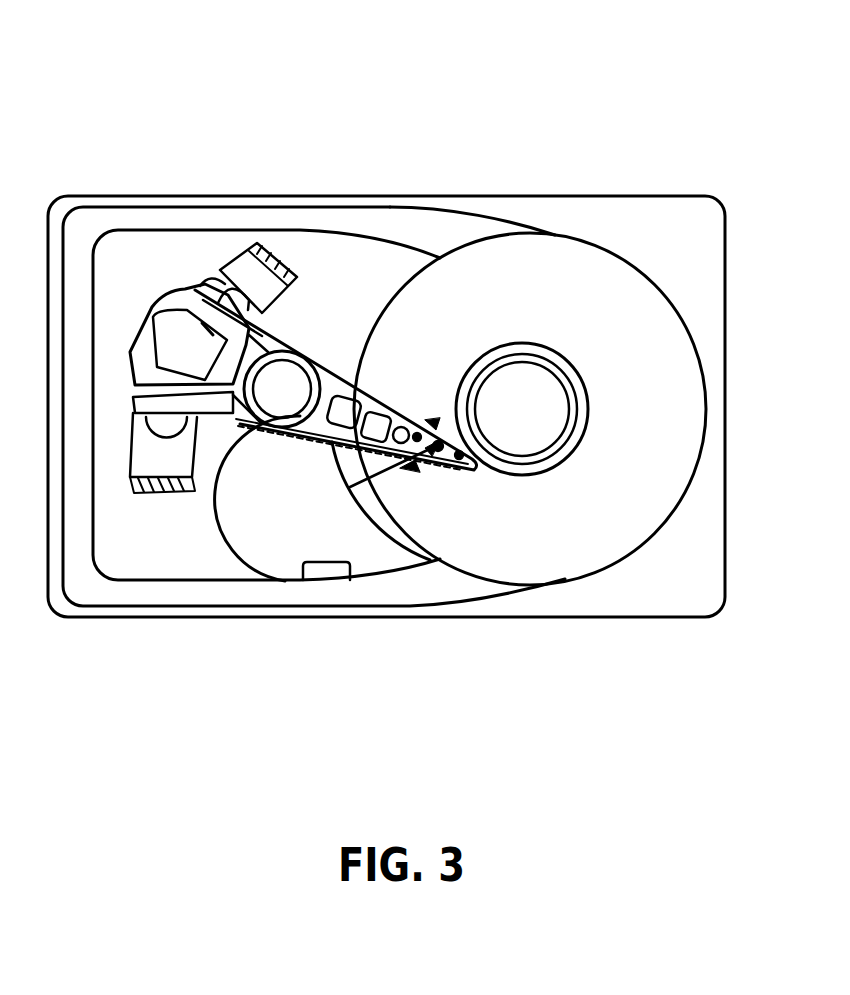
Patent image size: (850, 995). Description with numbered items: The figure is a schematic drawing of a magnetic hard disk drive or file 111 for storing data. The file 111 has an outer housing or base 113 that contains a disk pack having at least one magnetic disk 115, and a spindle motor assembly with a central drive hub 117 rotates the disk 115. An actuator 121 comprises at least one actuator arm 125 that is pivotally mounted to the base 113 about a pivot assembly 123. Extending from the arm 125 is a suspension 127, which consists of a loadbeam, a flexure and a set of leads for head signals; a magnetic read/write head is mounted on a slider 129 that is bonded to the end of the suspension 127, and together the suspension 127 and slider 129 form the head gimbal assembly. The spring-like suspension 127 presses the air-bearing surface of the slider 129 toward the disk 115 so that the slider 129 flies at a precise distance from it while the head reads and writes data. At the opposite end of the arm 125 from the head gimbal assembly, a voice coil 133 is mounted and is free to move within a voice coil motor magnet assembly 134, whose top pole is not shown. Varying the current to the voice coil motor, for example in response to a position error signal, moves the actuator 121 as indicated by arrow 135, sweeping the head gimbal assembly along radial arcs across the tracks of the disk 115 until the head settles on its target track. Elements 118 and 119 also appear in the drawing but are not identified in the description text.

The magnetic hard disk drive 111 is at (695, 110).
The outer housing or base 113 is at (583, 197).
The magnetic disk 115 is at (593, 272).
The central drive hub 117 is at (553, 347).
The base 118 is at (247, 565).
The connector 119 is at (343, 543).
The actuator 121 is at (232, 488).
The pivot assembly 123 is at (268, 428).
The actuator arm 125 is at (336, 387).
The suspension 127 is at (377, 400).
The slider 129 is at (452, 463).
The voice coil 133 is at (156, 306).
The voice coil motor magnet assembly 134 is at (243, 270).
The arrow 135 is at (347, 487).